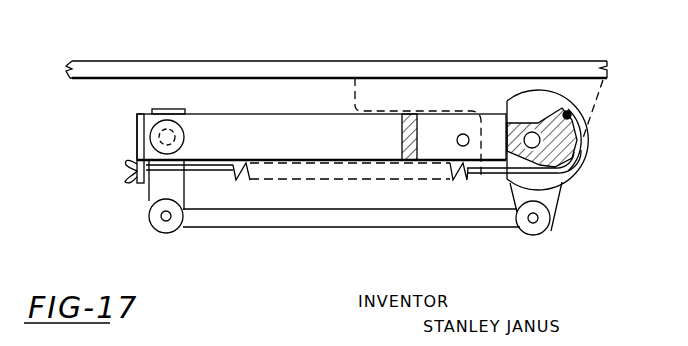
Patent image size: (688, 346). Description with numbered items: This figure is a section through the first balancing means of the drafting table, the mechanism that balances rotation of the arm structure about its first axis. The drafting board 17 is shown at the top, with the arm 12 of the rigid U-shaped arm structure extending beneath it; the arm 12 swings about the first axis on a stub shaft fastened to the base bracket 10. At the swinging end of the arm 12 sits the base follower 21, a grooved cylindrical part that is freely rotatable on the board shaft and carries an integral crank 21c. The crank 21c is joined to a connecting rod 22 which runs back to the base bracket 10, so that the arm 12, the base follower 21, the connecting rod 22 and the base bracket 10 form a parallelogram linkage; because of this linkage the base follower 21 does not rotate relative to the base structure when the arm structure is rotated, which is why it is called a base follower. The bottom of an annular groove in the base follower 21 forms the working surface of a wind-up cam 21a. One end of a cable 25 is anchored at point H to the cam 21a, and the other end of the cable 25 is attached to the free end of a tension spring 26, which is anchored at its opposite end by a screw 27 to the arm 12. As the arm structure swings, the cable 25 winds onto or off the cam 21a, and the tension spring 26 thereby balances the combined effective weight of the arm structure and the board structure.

The drafting board 17 is at (178, 70).
The arm 12 is at (228, 130).
The screw 27 is at (124, 171).
The base bracket 10 is at (155, 199).
The tension spring 26 is at (306, 170).
The cable 25 is at (483, 178).
The base follower 21 is at (556, 183).
The wind-up cam 21a is at (573, 145).
The crank 21c is at (553, 200).
The connecting rod 22 is at (315, 228).